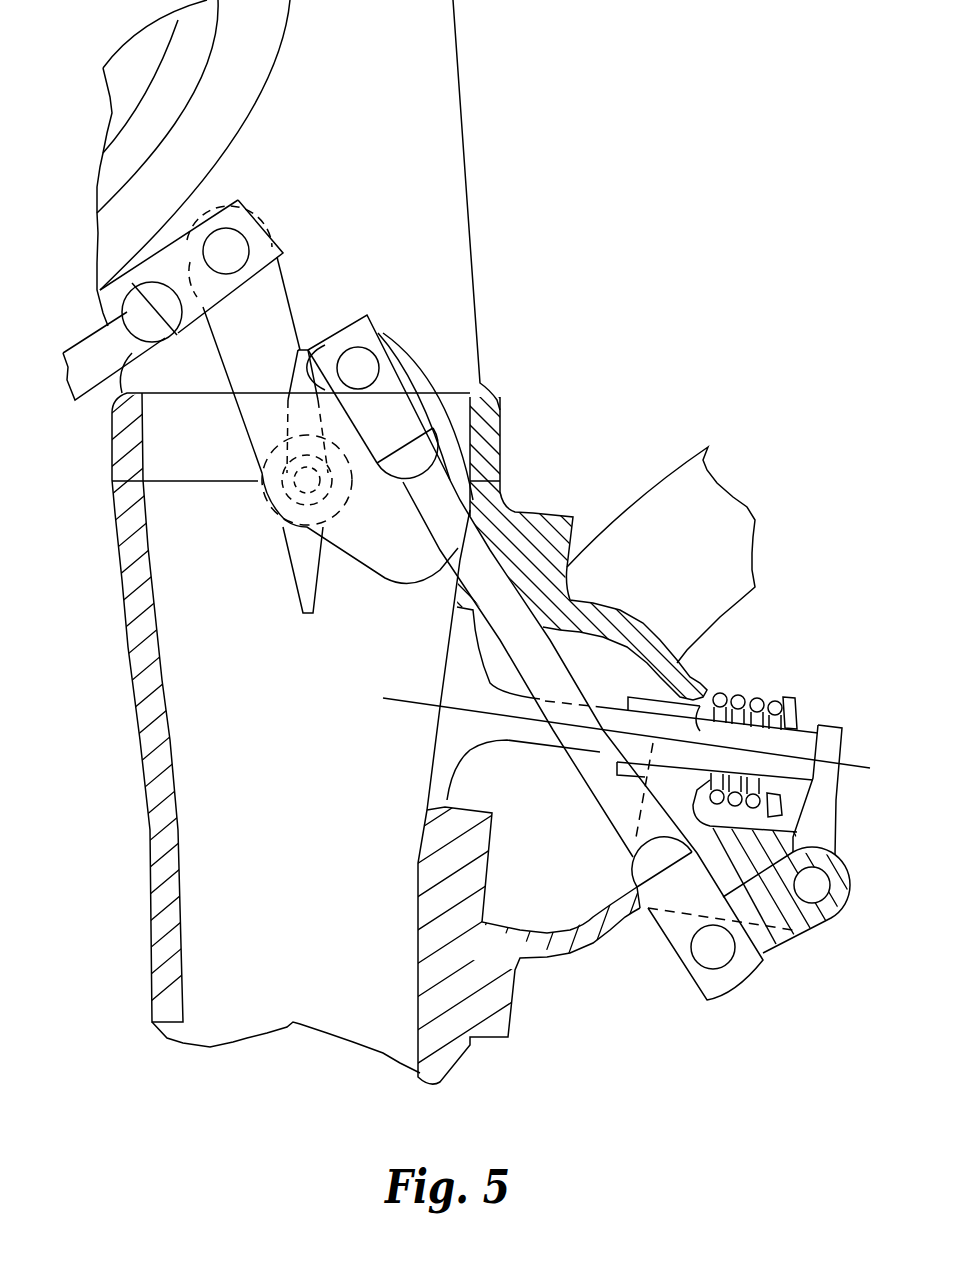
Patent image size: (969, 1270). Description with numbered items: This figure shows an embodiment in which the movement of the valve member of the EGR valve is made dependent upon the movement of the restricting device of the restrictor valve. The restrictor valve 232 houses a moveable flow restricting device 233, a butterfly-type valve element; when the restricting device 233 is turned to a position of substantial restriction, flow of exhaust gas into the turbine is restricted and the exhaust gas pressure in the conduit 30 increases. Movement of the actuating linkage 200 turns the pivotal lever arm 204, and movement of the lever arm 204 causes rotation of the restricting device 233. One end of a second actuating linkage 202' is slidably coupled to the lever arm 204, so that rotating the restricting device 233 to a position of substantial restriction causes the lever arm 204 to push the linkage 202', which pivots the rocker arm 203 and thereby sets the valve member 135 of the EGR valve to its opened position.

The conduit 30 is at (252, 958).
The valve member 135 is at (707, 690).
The actuating linkage 200 is at (92, 356).
The actuating linkage 202' is at (471, 548).
The rocker arm 203 is at (818, 829).
The pivotal lever arm 204 is at (292, 326).
The restrictor valve 232 is at (516, 369).
The flow restricting device 233 is at (303, 593).